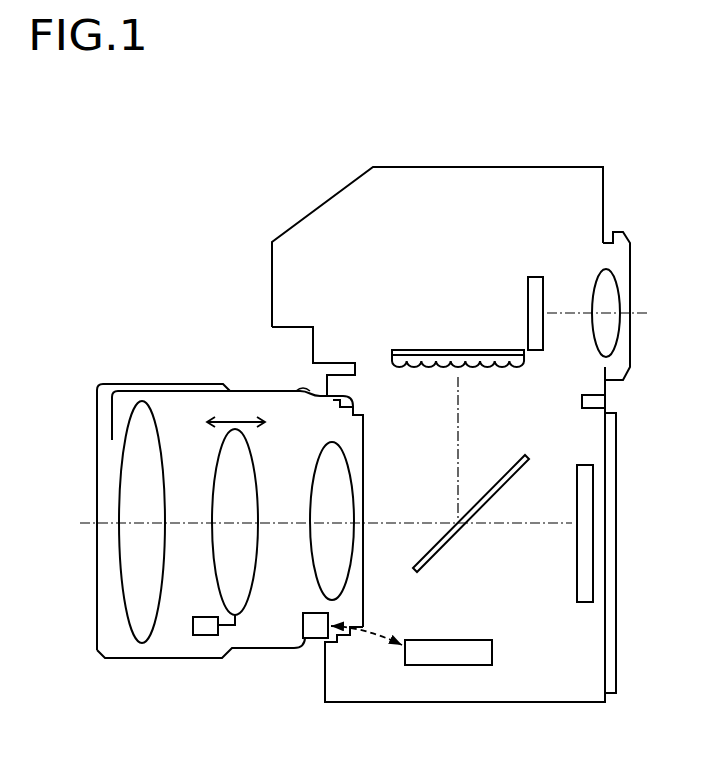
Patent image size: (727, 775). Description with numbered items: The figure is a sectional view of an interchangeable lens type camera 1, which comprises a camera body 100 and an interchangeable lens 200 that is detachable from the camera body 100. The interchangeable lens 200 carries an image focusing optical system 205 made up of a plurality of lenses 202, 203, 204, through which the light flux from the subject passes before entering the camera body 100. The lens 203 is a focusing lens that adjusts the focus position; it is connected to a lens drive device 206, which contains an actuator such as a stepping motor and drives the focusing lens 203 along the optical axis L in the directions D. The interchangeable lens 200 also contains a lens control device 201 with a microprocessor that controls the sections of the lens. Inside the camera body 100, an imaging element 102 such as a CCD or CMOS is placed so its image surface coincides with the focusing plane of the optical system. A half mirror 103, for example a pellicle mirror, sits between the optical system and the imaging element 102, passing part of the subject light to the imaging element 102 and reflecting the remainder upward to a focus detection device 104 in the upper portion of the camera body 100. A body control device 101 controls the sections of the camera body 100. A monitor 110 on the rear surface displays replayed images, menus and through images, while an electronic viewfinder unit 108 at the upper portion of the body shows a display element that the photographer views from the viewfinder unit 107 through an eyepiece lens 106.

The camera 1 is at (197, 240).
The camera body 100 is at (365, 702).
The body control device 101 is at (463, 667).
The imaging element 102 is at (583, 540).
The half mirror 103 is at (507, 473).
The focus detection device 104 is at (525, 362).
The eyepiece lens 106 is at (608, 282).
The viewfinder unit 107 is at (623, 232).
The electronic viewfinder unit 108 is at (545, 295).
The monitor 110 is at (610, 472).
The interchangeable lens 200 is at (163, 660).
The lens control device 201 is at (315, 632).
The lens 202 is at (147, 413).
The focusing lens 203 is at (238, 442).
The lens 204 is at (335, 468).
The image focusing optical system 205 is at (303, 388).
The lens drive device 206 is at (193, 627).
The optical axis L is at (107, 523).
The directions D is at (236, 412).